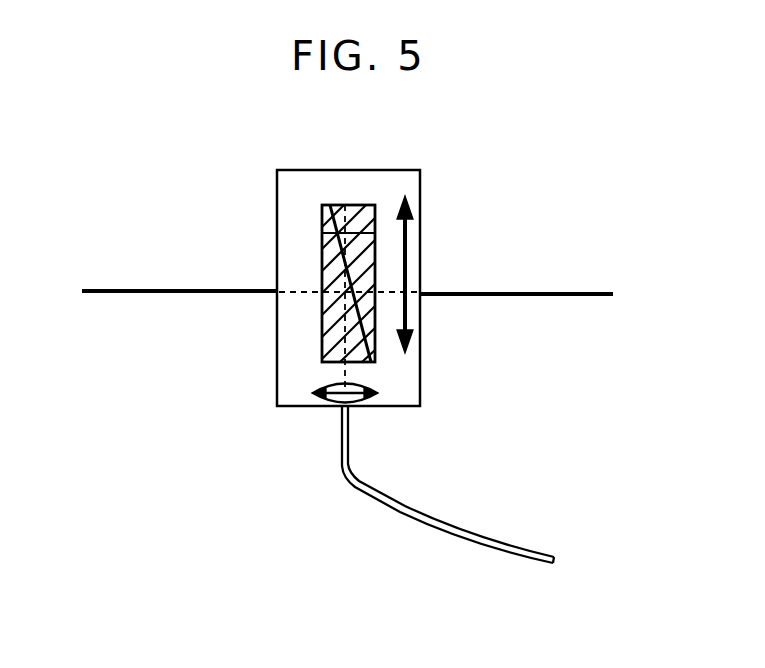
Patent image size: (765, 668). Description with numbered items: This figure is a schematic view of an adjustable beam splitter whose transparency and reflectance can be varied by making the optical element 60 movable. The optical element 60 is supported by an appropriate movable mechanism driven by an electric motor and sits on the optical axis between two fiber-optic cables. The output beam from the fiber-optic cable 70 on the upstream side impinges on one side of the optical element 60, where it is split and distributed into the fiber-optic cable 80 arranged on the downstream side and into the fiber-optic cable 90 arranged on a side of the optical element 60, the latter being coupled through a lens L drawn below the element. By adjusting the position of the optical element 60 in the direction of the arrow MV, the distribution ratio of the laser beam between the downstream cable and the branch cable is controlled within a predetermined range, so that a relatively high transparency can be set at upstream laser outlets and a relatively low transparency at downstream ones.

The optical element 60 is at (312, 249).
The fiber-optic cable 70 is at (128, 288).
The fiber-optic cable 80 is at (582, 291).
The fiber-optic cable 90 is at (493, 542).
The lens L is at (358, 384).
The arrow MV is at (408, 244).